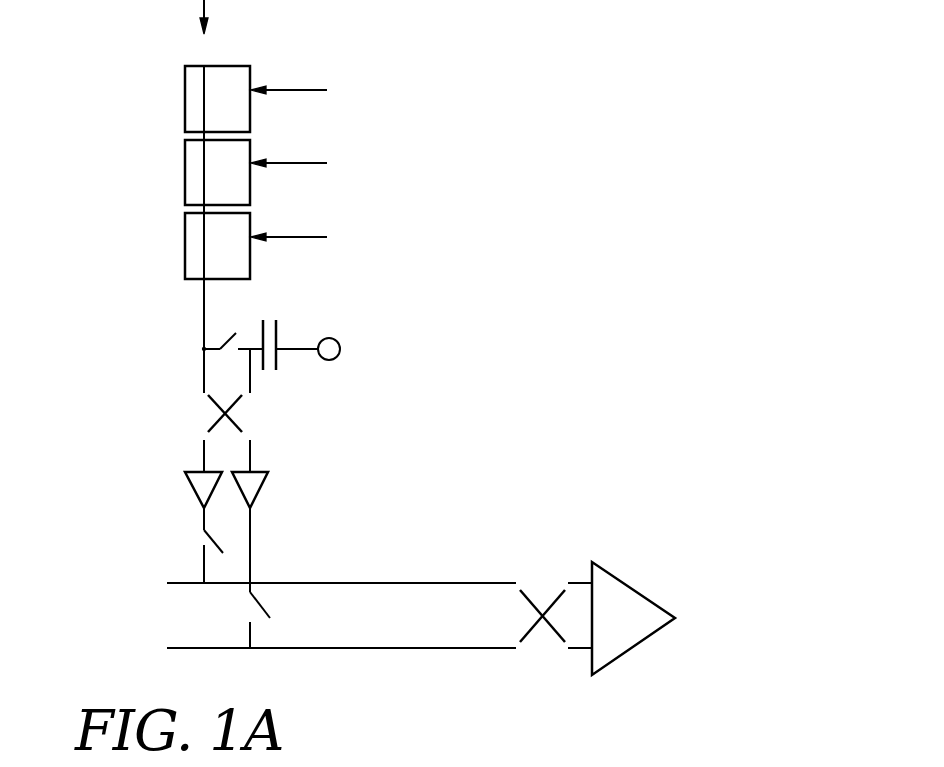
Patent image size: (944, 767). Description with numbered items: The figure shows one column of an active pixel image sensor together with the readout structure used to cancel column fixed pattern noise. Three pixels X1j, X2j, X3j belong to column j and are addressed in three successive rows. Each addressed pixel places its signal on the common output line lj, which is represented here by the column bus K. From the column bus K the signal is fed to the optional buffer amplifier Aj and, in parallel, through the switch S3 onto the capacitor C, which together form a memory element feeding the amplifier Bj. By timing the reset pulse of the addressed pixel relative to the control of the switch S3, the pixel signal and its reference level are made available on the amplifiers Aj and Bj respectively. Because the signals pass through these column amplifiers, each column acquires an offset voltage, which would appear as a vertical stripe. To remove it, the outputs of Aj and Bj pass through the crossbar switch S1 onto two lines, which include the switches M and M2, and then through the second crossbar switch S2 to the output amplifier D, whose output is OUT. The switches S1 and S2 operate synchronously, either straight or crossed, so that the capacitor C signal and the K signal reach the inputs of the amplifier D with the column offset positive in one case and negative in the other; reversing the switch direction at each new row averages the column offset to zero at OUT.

The column index j is at (219, 17).
The pixel X1j is at (172, 99).
The pixel X2j is at (172, 172).
The pixel X3j is at (172, 246).
The common output line lj is at (199, 298).
The column bus K is at (192, 330).
The switch S3 is at (233, 345).
The capacitor C is at (301, 328).
The crossbar switch S1 is at (279, 413).
The buffer amplifier Aj is at (181, 485).
The amplifier Bj is at (271, 516).
The switch M is at (199, 556).
The switch M2 is at (284, 620).
The crossbar switch S2 is at (556, 588).
The output amplifier D is at (645, 601).
The output OUT is at (776, 596).